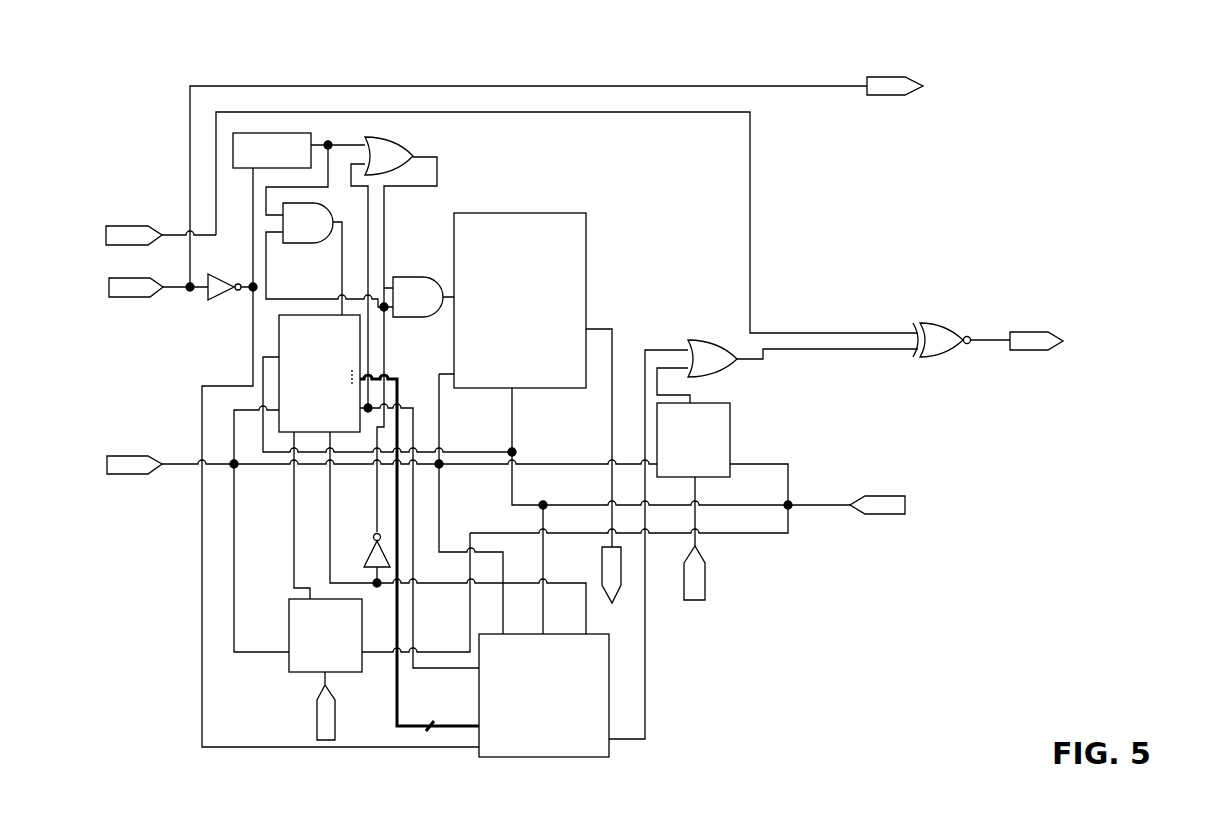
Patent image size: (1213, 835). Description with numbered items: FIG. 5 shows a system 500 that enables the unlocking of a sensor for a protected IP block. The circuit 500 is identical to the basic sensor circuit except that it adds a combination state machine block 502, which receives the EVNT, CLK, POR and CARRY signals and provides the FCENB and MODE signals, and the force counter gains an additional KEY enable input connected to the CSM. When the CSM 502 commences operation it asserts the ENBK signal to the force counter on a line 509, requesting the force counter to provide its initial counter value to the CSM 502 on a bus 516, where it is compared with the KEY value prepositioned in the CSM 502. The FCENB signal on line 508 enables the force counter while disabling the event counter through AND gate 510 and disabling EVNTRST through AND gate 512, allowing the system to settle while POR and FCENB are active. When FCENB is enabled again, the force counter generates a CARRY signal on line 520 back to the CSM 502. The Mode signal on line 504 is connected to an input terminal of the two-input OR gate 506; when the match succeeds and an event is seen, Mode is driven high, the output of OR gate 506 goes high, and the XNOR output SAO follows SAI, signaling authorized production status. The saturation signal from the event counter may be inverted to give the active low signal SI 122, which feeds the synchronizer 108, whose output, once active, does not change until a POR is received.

The system 500 is at (622, 399).
The combination state machine block 502 is at (612, 755).
The line 504 is at (645, 690).
The OR gate 506 is at (697, 337).
The line 508 is at (612, 622).
The line 509 is at (334, 543).
The AND gate 510 is at (406, 273).
The AND gate 512 is at (288, 246).
The bus 516 is at (395, 706).
The line 520 is at (413, 632).
The synchronizer 108 is at (732, 432).
The SI 122 is at (705, 578).